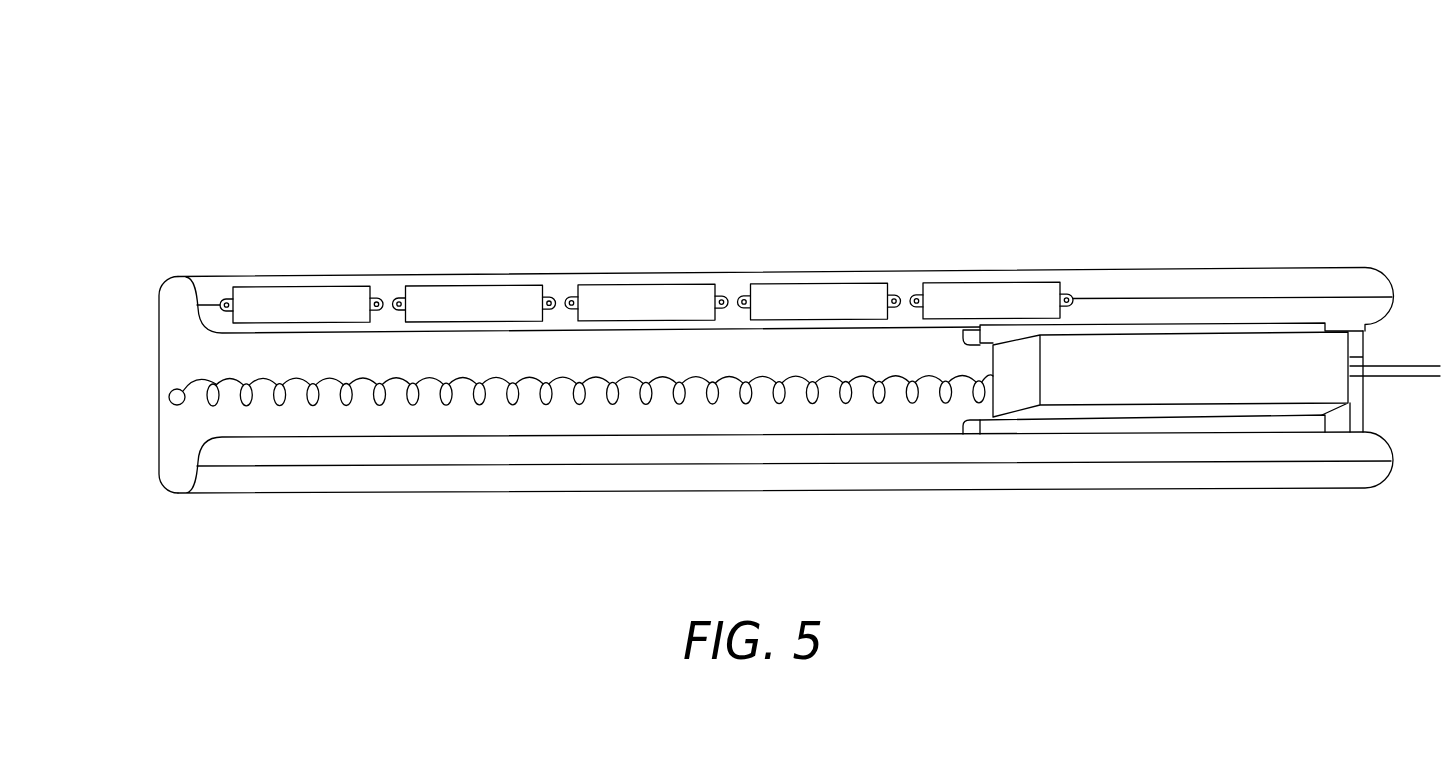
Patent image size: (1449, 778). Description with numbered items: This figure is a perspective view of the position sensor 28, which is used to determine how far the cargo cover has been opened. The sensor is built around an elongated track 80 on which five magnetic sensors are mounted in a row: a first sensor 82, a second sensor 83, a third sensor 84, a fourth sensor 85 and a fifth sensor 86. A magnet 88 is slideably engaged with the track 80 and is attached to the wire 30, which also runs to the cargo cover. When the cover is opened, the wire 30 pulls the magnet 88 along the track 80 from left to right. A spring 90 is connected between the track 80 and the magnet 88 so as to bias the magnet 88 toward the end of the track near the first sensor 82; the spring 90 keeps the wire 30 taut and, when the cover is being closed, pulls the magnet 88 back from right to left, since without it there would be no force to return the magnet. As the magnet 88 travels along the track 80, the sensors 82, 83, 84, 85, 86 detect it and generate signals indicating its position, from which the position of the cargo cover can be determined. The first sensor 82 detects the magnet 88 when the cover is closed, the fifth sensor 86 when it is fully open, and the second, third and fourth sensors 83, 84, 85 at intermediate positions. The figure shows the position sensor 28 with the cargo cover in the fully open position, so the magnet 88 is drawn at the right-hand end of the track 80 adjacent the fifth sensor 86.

The position sensor 28 is at (218, 154).
The wire 30 is at (1382, 366).
The track 80 is at (159, 362).
The first sensor 82 is at (305, 297).
The second sensor 83 is at (462, 295).
The third sensor 84 is at (637, 294).
The fourth sensor 85 is at (808, 293).
The fifth sensor 86 is at (982, 292).
The magnet 88 is at (1363, 357).
The spring 90 is at (216, 403).